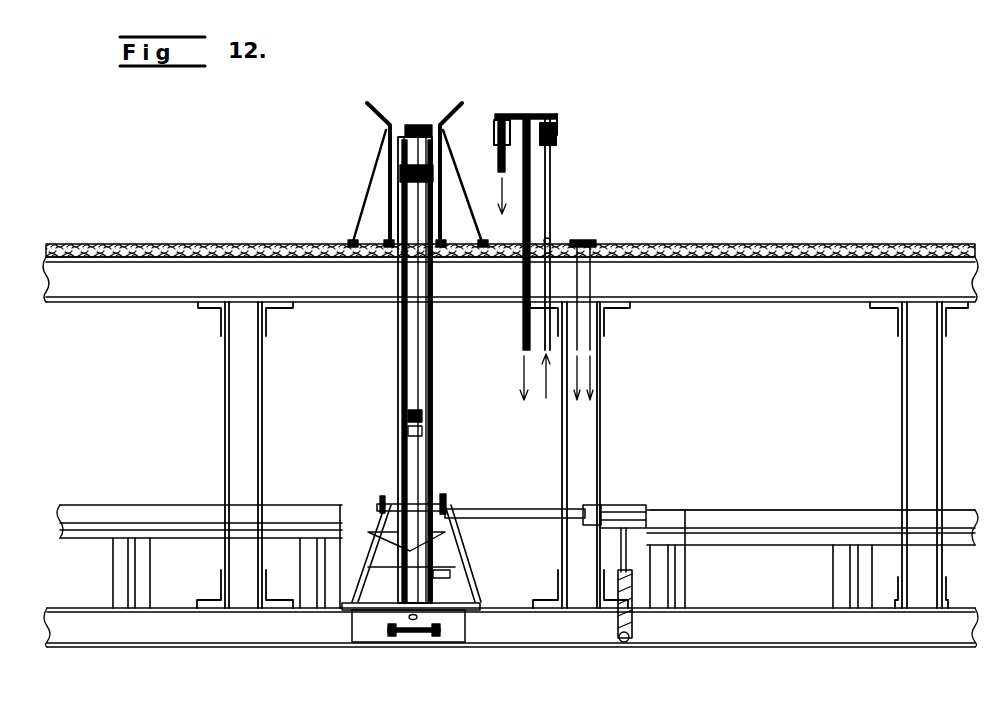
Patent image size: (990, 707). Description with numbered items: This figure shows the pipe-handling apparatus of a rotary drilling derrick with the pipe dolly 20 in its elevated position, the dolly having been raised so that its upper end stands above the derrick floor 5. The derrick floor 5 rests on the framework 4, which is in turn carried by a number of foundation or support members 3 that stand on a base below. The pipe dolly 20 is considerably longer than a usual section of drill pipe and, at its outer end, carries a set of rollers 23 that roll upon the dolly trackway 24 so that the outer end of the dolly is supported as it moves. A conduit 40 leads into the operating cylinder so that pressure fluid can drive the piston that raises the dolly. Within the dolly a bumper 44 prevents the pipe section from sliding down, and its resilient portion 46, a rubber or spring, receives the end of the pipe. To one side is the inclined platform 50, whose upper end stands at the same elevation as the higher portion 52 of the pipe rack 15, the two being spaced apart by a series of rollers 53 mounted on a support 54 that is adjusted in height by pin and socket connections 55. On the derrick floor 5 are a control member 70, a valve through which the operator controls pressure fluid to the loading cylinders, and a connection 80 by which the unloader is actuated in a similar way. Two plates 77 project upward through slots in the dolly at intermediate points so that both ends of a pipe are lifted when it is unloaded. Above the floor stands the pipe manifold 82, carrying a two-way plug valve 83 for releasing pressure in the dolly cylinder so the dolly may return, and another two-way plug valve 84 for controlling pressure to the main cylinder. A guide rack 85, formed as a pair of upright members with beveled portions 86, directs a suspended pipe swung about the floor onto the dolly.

The support members 3 is at (250, 397).
The framework 4 is at (700, 298).
The derrick floor 5 is at (735, 256).
The pipe rack 15 is at (290, 514).
The pipe dolly 20 is at (420, 128).
The rollers 23 is at (446, 504).
The dolly trackway 24 is at (386, 508).
The conduit 40 is at (551, 197).
The bumper 44 is at (428, 432).
The resilient portion 46 is at (428, 415).
The inclined platform 50 is at (508, 509).
The higher portion of the pipe rack 52 is at (812, 495).
The rollers 53 is at (620, 508).
The support 54 is at (620, 545).
The pin and socket connections 55 is at (634, 574).
The control member 70 is at (578, 244).
The plate 77 is at (417, 180).
The connection 80 is at (598, 245).
The pipe manifold 82 is at (528, 116).
The two-way plug valve 83 is at (510, 106).
The two-way plug valve 84 is at (558, 138).
The guide rack 85 is at (392, 152).
The beveled portions 86 is at (434, 165).